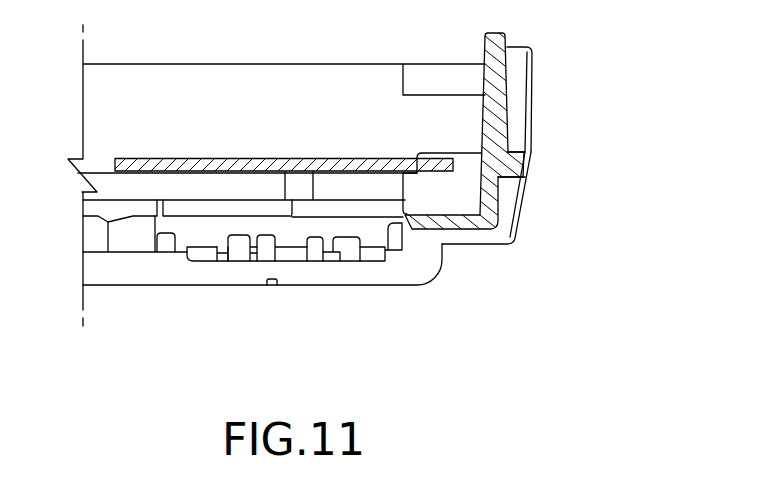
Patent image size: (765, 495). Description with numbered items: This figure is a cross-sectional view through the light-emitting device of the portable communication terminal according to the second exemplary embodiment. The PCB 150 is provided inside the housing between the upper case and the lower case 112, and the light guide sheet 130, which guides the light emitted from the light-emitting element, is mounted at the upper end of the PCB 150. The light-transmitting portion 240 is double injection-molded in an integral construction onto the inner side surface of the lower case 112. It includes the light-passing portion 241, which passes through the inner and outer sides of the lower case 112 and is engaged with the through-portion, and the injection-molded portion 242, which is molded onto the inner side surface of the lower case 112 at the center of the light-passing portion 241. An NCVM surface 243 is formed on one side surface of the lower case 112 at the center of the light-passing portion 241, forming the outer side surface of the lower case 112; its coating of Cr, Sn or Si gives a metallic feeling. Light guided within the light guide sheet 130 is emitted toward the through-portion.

The lower case 112 is at (325, 272).
The light guide sheet 130 is at (217, 158).
The PCB 150 is at (143, 188).
The light-transmitting portion 240 is at (533, 163).
The light-passing portion 241 is at (500, 165).
The injection-molded portion 242 is at (528, 198).
The NCVM surface 243 is at (533, 120).